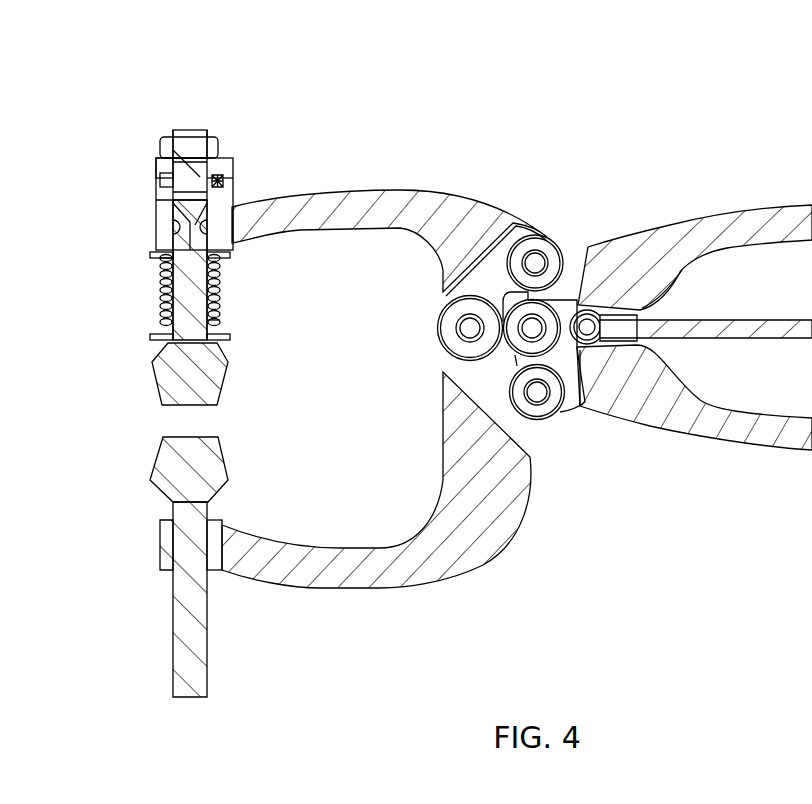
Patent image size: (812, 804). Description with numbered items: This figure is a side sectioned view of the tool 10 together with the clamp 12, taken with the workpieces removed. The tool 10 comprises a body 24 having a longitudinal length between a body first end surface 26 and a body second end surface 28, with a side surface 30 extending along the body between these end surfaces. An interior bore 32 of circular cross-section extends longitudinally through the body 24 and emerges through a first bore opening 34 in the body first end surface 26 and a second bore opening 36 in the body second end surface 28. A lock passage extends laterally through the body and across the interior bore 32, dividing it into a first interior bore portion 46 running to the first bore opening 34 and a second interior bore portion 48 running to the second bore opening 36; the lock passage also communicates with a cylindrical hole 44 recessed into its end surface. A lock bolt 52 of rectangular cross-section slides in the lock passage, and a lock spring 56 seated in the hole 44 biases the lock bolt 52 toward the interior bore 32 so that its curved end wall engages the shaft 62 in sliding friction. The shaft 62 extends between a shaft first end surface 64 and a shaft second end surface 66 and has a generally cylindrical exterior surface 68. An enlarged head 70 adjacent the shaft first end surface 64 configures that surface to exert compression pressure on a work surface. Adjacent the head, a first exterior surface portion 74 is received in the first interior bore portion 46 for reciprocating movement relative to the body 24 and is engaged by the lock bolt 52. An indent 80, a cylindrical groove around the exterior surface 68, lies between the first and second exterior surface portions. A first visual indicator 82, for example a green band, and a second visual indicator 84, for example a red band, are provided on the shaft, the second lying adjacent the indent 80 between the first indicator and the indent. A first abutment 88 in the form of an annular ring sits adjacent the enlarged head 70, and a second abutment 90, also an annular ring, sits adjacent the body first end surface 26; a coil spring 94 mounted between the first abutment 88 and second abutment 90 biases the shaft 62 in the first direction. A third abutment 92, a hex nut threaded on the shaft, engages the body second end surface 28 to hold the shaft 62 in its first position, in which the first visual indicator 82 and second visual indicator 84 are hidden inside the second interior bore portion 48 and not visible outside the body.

The tool 10 is at (340, 115).
The clamp 12 is at (480, 194).
The body 24 is at (160, 246).
The body first end surface 26 is at (225, 257).
The body second end surface 28 is at (225, 178).
The side surface 30 is at (160, 253).
The interior bore 32 is at (235, 205).
The first bore opening 34 is at (172, 282).
The second bore opening 36 is at (180, 148).
The cylindrical hole 44 is at (226, 182).
The first interior bore portion 46 is at (173, 226).
The second interior bore portion 48 is at (205, 165).
The lock bolt 52 is at (210, 155).
The lock spring 56 is at (232, 190).
The shaft 62 is at (216, 290).
The shaft first end surface 64 is at (173, 407).
The shaft second end surface 66 is at (200, 172).
The cylindrical exterior surface 68 is at (222, 318).
The enlarged head 70 is at (222, 388).
The first exterior surface portion 74 is at (222, 305).
The indent 80 is at (216, 210).
The first visual indicator 82 is at (166, 178).
The second visual indicator 84 is at (180, 200).
The first abutment 88 is at (233, 338).
The second abutment 90 is at (174, 262).
The third abutment 92 is at (163, 158).
The spring 94 is at (166, 315).